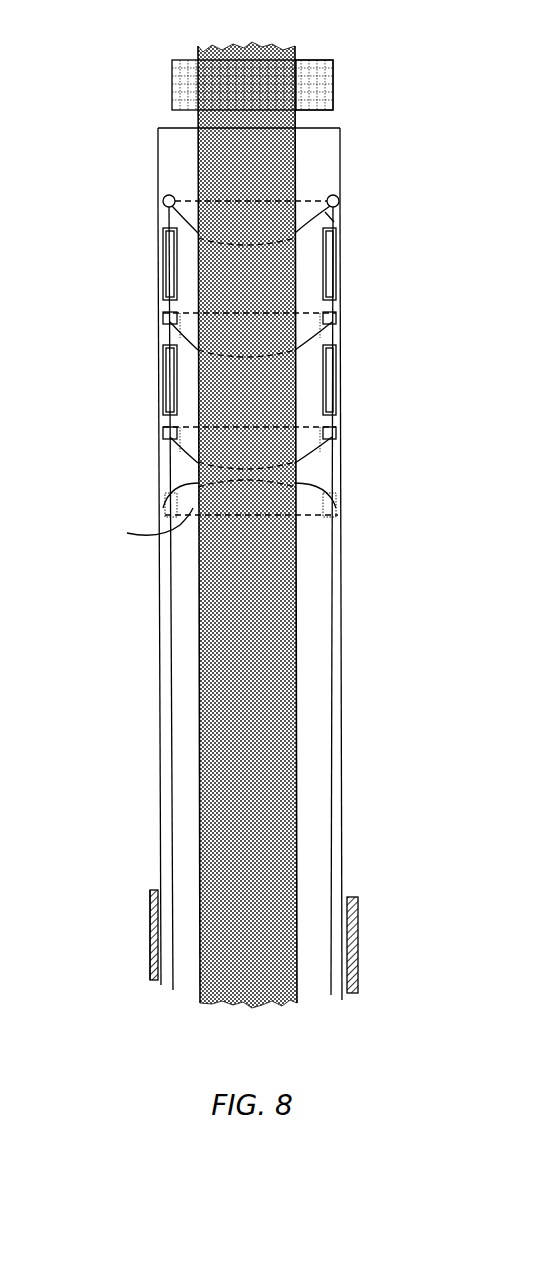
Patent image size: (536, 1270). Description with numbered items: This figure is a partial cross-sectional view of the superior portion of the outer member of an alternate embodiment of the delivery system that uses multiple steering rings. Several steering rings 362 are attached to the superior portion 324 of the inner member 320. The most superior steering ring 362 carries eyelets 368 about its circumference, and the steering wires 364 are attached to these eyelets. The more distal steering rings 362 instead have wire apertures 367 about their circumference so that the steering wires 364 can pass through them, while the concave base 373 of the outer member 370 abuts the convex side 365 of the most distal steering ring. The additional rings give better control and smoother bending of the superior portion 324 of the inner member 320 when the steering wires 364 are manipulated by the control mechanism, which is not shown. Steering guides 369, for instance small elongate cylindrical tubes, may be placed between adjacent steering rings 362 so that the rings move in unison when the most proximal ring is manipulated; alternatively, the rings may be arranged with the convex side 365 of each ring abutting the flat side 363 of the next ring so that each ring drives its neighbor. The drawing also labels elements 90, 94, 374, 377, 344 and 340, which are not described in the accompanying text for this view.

The proximal cap 90 is at (172, 92).
The mesh portion 94 is at (333, 102).
The housing end wall 374 is at (342, 147).
The superior portion 324 is at (286, 165).
The inner member 320 is at (286, 778).
The eyelets 368 is at (163, 200).
The steering rings 362 is at (345, 222).
The flat side 363 is at (162, 180).
The steering guides 369 is at (163, 267).
The wire apertures 367 is at (162, 325).
The convex side 365 is at (160, 228).
The retainer 377 is at (162, 507).
The concave base 373 is at (142, 528).
The outer member 370 is at (160, 703).
The steering wires 364 is at (172, 817).
The seal 344 is at (152, 883).
The sheath 340 is at (148, 957).